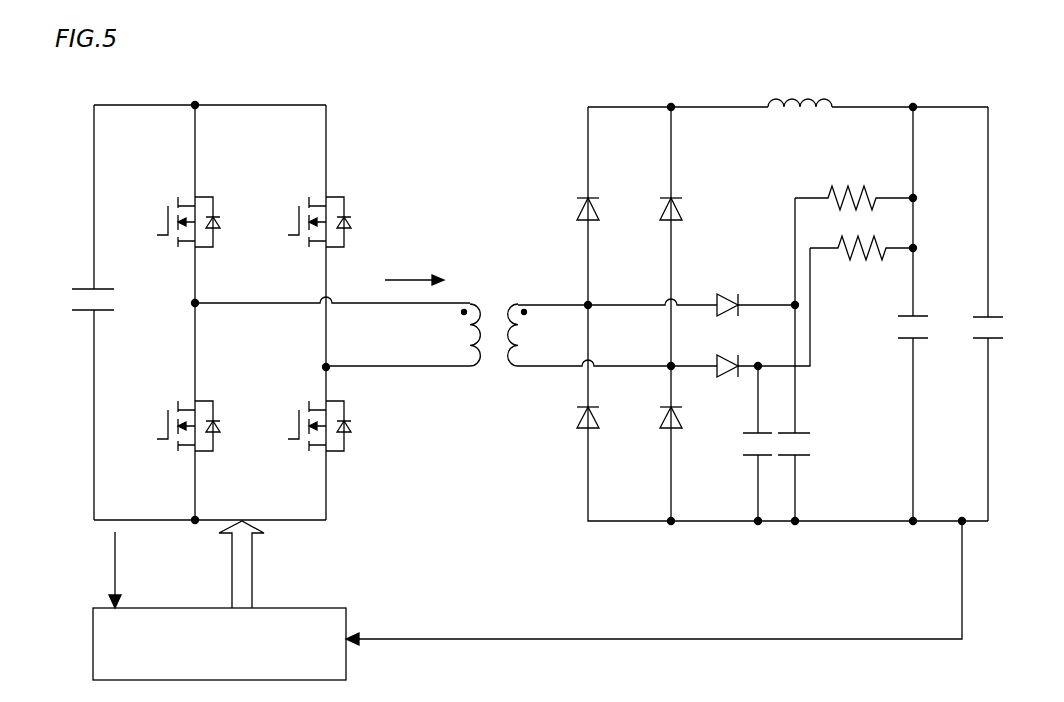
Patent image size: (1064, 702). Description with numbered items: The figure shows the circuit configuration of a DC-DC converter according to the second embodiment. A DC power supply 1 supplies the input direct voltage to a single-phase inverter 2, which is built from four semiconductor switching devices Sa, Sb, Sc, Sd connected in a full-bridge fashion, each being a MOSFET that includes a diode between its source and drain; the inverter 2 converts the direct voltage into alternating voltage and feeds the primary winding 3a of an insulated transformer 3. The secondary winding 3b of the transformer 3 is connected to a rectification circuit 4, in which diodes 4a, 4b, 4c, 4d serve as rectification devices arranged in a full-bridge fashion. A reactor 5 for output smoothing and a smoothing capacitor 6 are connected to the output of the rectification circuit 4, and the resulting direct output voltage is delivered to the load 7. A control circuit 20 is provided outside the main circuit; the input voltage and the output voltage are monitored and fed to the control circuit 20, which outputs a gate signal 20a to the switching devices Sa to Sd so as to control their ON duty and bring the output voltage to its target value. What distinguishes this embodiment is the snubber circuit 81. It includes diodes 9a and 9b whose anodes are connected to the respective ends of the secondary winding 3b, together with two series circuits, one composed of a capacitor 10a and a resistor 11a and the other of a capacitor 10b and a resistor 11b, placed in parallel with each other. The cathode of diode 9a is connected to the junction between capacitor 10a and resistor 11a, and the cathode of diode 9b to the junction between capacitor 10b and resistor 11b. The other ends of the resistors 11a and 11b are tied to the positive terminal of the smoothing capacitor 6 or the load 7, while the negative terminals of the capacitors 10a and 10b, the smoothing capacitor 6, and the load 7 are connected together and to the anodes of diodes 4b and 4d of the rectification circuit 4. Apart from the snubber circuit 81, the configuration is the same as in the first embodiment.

The DC power supply 1 is at (73, 322).
The single-phase inverter 2 is at (254, 274).
The semiconductor switching device Sa is at (177, 192).
The semiconductor switching device Sb is at (178, 393).
The semiconductor switching device Sc is at (340, 192).
The semiconductor switching device Sd is at (352, 405).
The insulated transformer 3 is at (364, 340).
The primary winding 3a is at (478, 377).
The secondary winding 3b is at (518, 378).
The rectification circuit 4 is at (753, 277).
The diode 4a is at (568, 193).
The diode 4b is at (571, 436).
The diode 4c is at (693, 207).
The diode 4d is at (663, 436).
The reactor 5 is at (782, 85).
The smoothing capacitor 6 is at (930, 295).
The load 7 is at (1002, 352).
The snubber circuit 81 is at (804, 348).
The diode 9a is at (723, 293).
The diode 9b is at (722, 388).
The capacitor 10a is at (817, 438).
The capacitor 10b is at (743, 458).
The resistor 11a is at (860, 185).
The resistor 11b is at (853, 262).
The control circuit 20 is at (337, 608).
The gate signal 20a is at (253, 567).